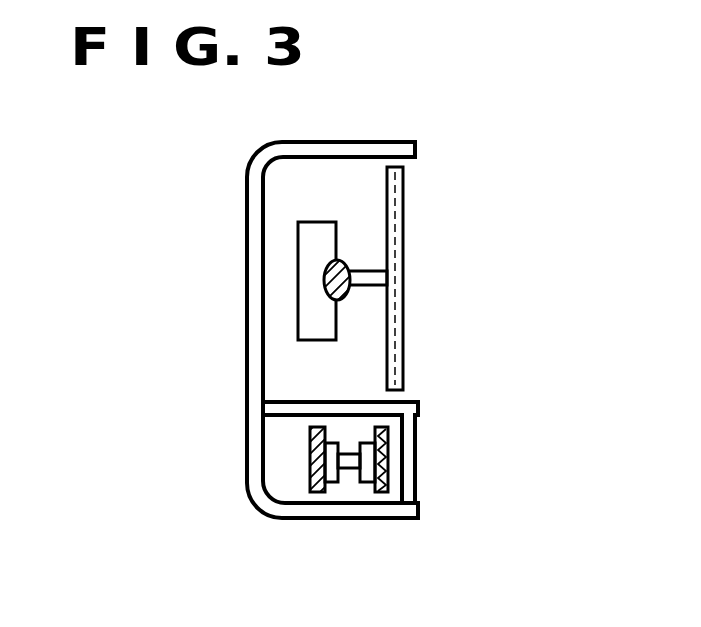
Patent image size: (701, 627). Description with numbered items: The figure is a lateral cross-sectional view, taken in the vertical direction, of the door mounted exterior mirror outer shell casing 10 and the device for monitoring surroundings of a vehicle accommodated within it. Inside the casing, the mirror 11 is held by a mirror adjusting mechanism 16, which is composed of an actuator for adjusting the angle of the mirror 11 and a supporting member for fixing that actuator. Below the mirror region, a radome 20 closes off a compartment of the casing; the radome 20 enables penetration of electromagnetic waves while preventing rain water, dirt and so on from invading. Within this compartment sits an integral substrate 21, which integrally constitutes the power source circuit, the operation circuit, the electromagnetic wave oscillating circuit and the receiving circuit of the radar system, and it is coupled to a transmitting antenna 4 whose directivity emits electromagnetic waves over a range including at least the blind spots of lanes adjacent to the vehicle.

The door mounted exterior mirror outer shell casing 10 is at (417, 150).
The mirror 11 is at (403, 265).
The mirror adjusting mechanism 16 is at (298, 271).
The radome 20 is at (415, 452).
The integral substrate 21 is at (316, 492).
The transmitting antenna 4 is at (378, 492).